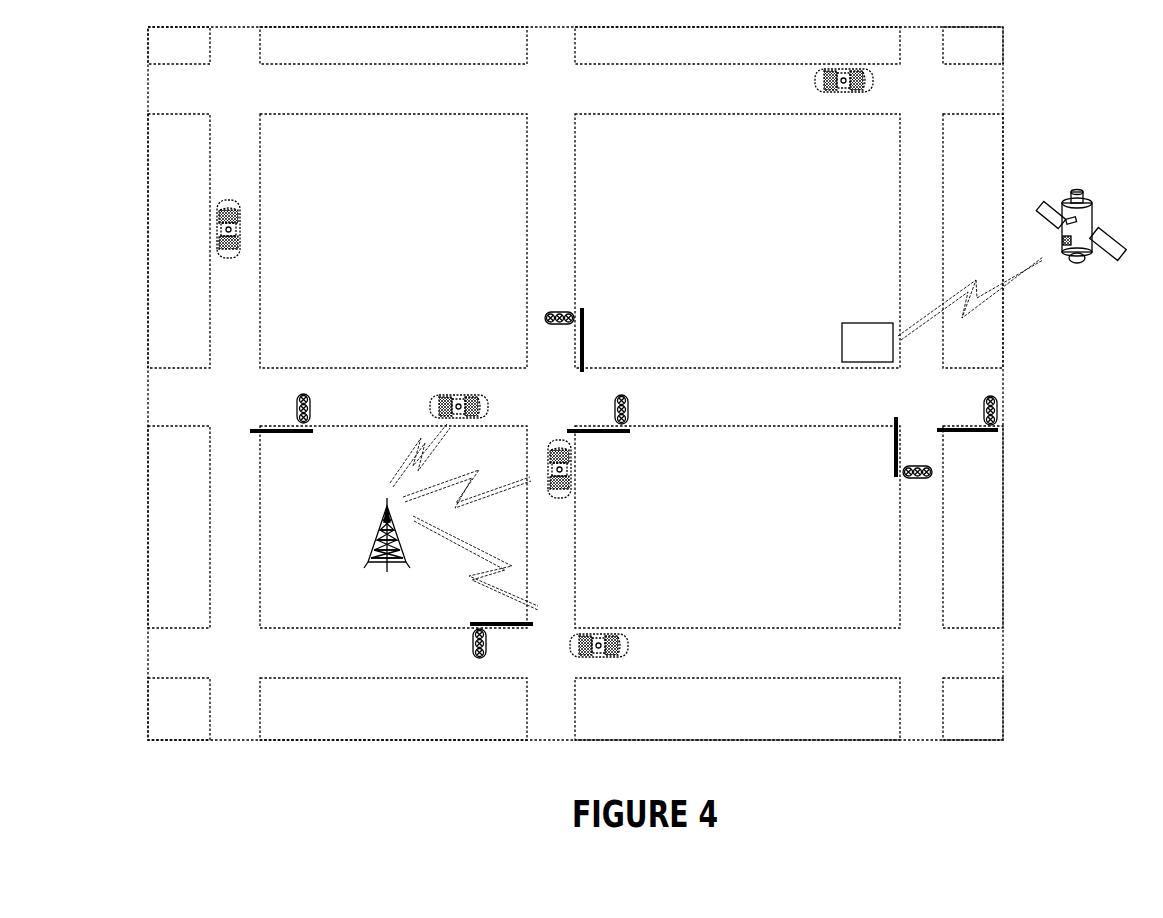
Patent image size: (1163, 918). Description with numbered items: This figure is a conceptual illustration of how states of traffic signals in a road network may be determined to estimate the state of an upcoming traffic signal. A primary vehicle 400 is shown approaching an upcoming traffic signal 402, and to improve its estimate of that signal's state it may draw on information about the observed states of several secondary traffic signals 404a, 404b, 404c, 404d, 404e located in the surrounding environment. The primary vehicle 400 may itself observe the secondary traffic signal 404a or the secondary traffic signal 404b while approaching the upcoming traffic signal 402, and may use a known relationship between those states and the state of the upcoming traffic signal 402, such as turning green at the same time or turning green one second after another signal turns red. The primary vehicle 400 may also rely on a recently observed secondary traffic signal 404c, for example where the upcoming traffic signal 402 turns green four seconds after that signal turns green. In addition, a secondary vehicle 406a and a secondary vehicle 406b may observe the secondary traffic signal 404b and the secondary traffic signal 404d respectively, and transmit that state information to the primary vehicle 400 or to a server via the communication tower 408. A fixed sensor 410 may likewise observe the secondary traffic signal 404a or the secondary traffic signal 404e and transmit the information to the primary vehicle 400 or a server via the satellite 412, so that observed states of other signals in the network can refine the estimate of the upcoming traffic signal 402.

The primary vehicle 400 is at (459, 393).
The upcoming traffic signal 402 is at (630, 427).
The secondary traffic signal 404a is at (991, 434).
The secondary traffic signal 404b is at (584, 310).
The secondary traffic signal 404c is at (305, 434).
The secondary traffic signal 404d is at (473, 642).
The secondary traffic signal 404e is at (897, 478).
The secondary vehicle 406a is at (572, 489).
The secondary vehicle 406b is at (628, 644).
The communication tower 408 is at (386, 512).
The fixed sensor 410 is at (880, 354).
The satellite 412 is at (1088, 260).